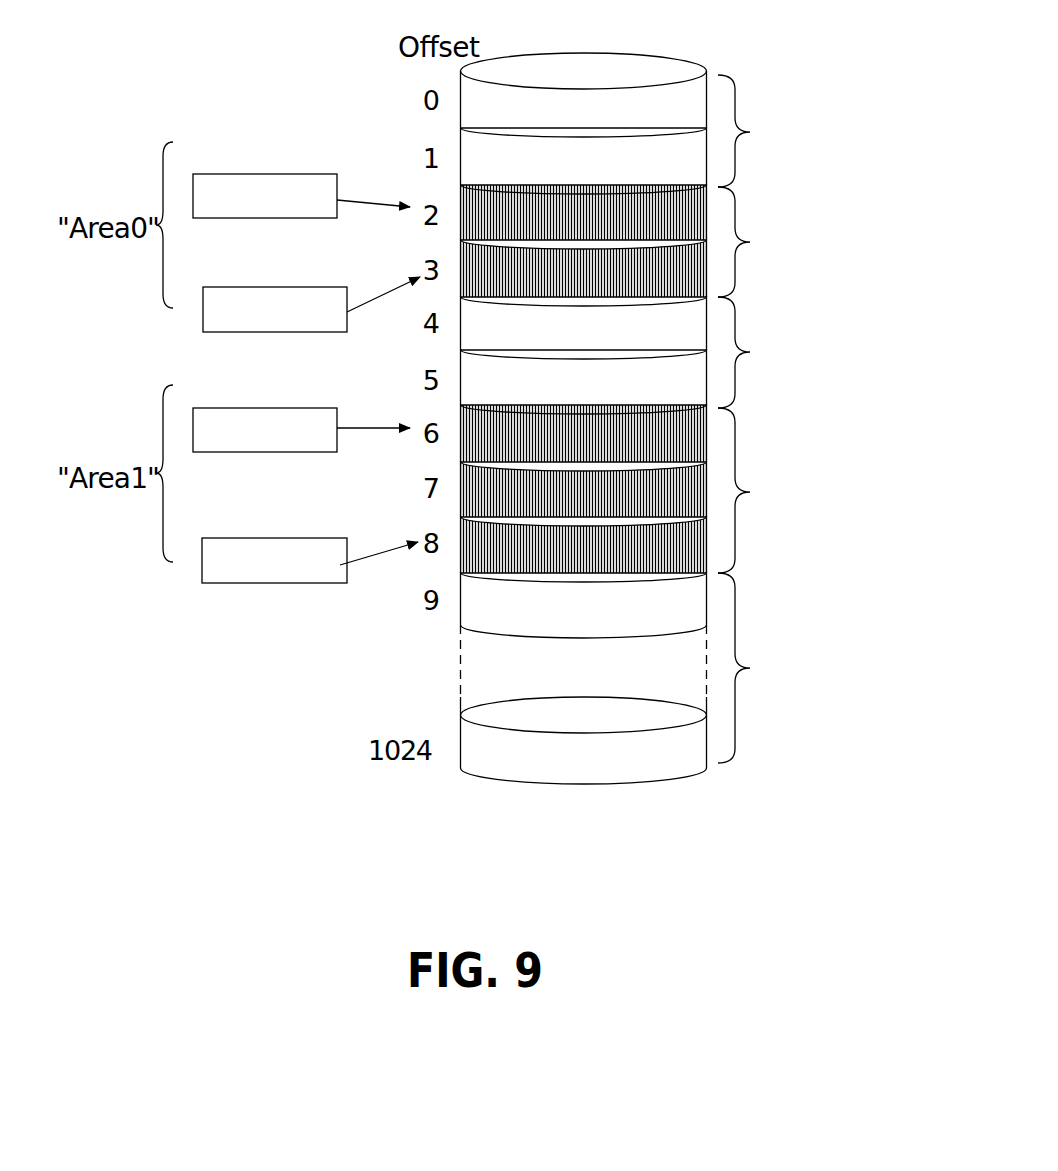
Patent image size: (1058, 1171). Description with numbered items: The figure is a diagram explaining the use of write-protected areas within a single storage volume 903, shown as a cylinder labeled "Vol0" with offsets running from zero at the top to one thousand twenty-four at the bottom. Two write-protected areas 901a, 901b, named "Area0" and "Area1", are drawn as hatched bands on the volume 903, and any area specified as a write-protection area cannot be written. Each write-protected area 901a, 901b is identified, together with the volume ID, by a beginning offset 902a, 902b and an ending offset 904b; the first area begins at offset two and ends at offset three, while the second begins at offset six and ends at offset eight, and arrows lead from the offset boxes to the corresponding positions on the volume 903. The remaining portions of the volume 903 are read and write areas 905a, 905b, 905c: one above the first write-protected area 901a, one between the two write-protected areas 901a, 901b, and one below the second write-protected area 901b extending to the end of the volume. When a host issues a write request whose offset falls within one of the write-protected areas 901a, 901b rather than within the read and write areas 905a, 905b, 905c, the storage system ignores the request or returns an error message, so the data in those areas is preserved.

The volume 903 is at (623, 47).
The write-protected area 901a is at (840, 210).
The write-protected area 901b is at (812, 465).
The read and write area 905a is at (852, 100).
The read and write area 905b is at (827, 325).
The read and write area 905c is at (837, 640).
The beginning offset 902a is at (205, 133).
The beginning offset 902b is at (242, 372).
The ending offset 904b is at (318, 247).